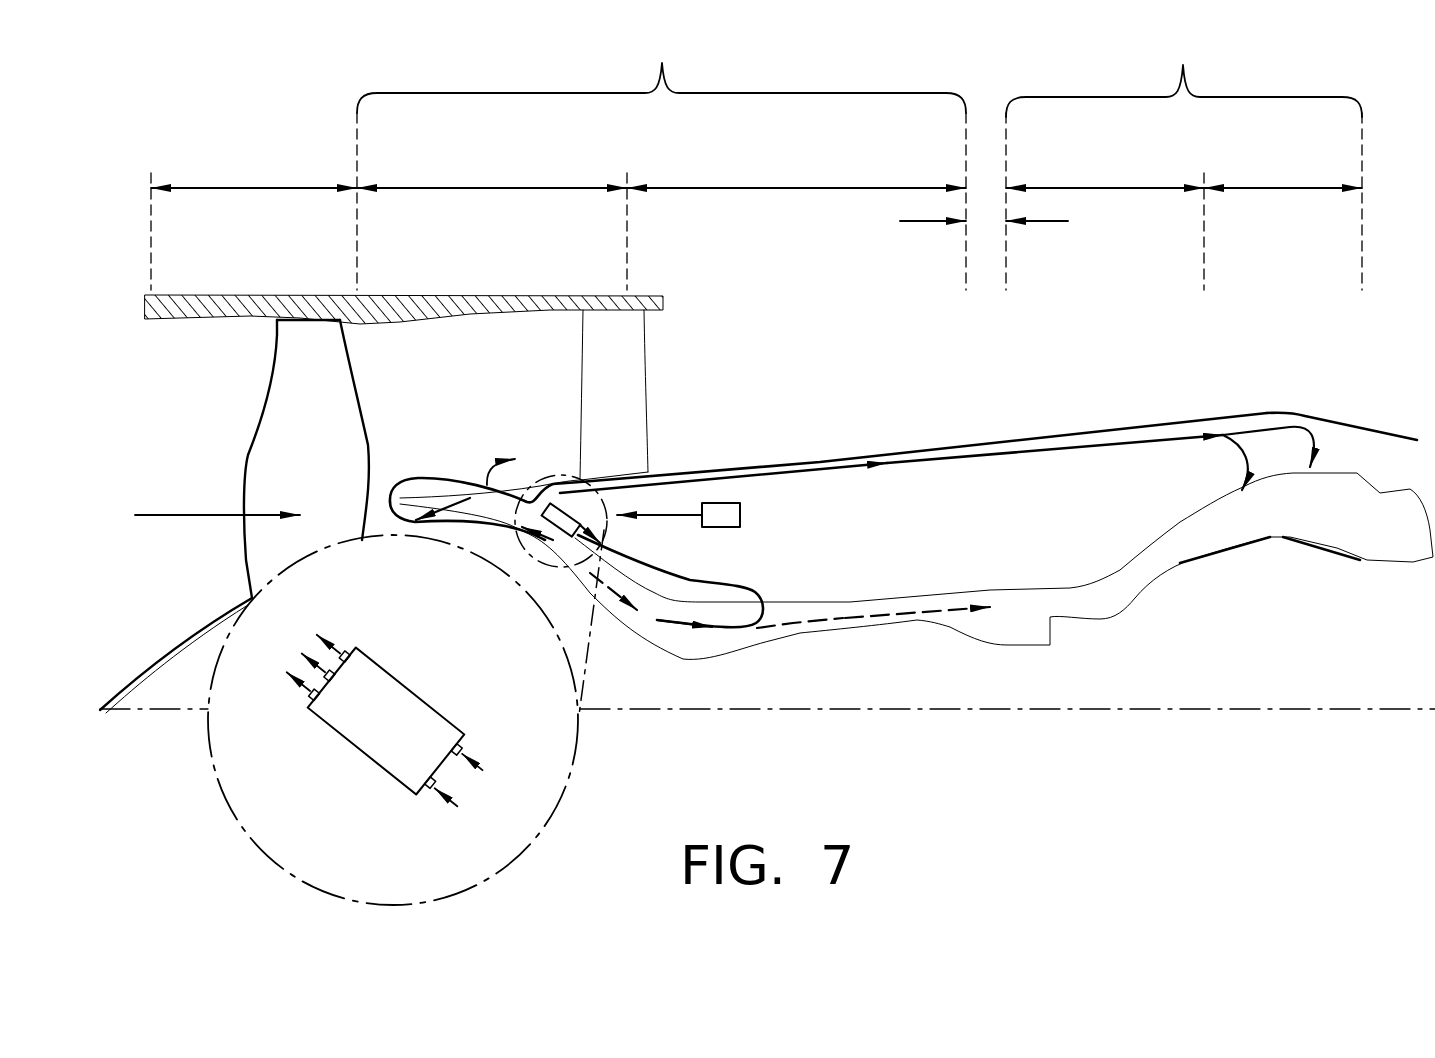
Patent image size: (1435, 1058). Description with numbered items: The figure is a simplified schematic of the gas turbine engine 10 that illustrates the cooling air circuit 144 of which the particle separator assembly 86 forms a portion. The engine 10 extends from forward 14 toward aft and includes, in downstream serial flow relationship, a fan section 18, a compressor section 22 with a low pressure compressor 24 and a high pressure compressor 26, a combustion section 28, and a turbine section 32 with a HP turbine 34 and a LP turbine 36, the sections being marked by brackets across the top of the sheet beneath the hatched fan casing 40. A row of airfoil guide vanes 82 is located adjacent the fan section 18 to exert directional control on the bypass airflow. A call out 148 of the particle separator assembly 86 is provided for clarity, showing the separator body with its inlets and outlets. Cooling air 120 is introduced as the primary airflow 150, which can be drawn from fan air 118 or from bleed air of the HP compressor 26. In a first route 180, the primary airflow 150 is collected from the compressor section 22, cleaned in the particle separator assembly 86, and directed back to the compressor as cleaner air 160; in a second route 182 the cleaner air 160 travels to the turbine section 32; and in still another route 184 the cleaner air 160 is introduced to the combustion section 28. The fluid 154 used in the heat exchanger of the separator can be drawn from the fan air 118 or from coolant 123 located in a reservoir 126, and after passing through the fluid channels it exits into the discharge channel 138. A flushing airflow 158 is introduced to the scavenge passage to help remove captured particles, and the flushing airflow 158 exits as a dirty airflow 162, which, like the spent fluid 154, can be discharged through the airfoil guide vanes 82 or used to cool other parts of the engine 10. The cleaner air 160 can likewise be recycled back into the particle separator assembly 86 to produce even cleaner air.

The gas turbine engine 10 is at (950, 372).
The forward 14 is at (193, 449).
The fan section 18 is at (253, 188).
The compressor section 22 is at (662, 63).
The low pressure (LP) compressor 24 is at (490, 188).
The high pressure (HP) compressor 26 is at (795, 188).
The combustion section 28 is at (913, 222).
The turbine section 32 is at (1183, 65).
The HP turbine 34 is at (1107, 188).
The LP turbine 36 is at (1282, 187).
The fan casing 40 is at (393, 295).
The airfoil guide vanes 82 is at (590, 352).
The particle separator assembly 86 is at (572, 512).
The fan air 118 is at (220, 516).
The cooling air 120 is at (992, 452).
The coolant 123 is at (661, 518).
The reservoir 126 is at (742, 516).
The discharge channel 138 is at (308, 690).
The cooling air circuit 144 is at (537, 477).
The call out 148 is at (558, 806).
The primary airflow 150 is at (737, 582).
The fluid 154 is at (457, 808).
The flushing airflow 158 is at (548, 696).
The cleaner air 160 is at (336, 650).
The dirty airflow 162 is at (322, 666).
The first route 180 is at (420, 478).
The second route 182 is at (814, 462).
The route 184 is at (833, 614).